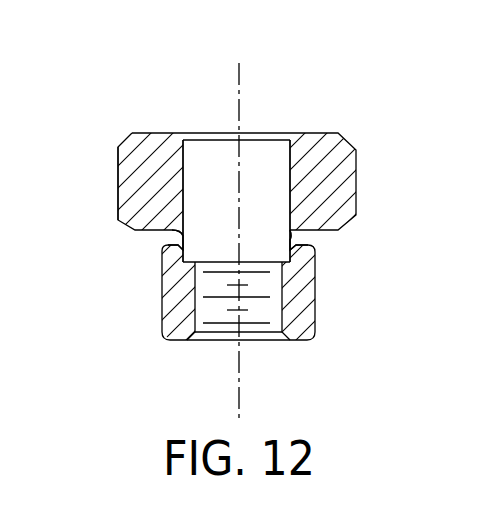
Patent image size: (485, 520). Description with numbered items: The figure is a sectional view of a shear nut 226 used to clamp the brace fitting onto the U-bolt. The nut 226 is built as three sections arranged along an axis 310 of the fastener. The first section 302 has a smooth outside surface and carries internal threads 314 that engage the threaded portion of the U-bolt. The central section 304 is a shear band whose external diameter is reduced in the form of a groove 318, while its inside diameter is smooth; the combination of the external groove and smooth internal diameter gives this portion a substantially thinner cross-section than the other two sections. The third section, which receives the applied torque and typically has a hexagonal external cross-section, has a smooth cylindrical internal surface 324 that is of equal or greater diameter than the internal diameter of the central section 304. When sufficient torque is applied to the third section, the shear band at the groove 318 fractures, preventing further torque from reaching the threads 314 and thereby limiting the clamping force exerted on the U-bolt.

The nut 226 is at (126, 116).
The axis 310 is at (240, 95).
The smooth diameter (cylindrical surface) 324 is at (291, 180).
The first section 302 is at (315, 300).
The internal threads 314 is at (258, 307).
The groove 318 is at (178, 238).
The central section 304 is at (296, 238).